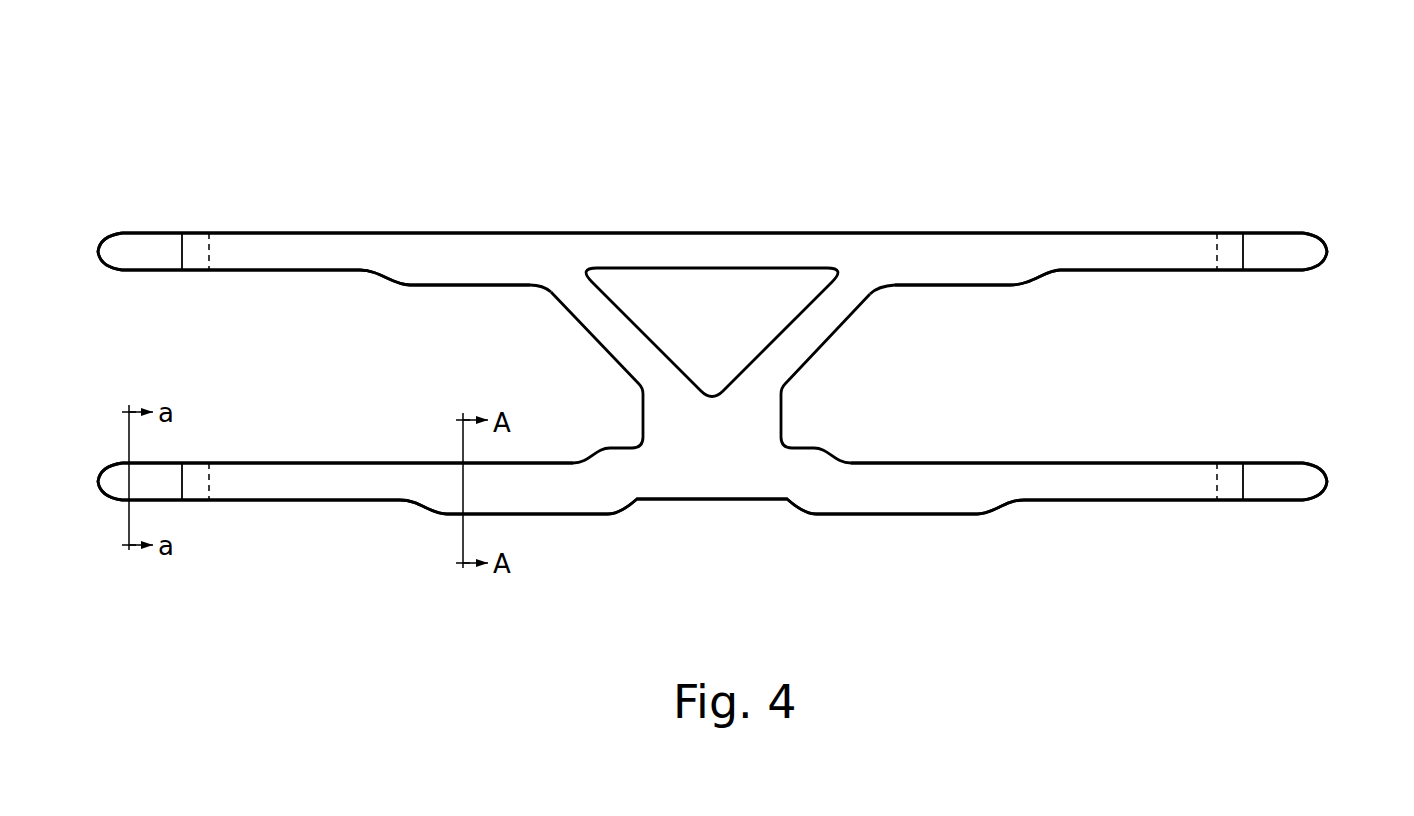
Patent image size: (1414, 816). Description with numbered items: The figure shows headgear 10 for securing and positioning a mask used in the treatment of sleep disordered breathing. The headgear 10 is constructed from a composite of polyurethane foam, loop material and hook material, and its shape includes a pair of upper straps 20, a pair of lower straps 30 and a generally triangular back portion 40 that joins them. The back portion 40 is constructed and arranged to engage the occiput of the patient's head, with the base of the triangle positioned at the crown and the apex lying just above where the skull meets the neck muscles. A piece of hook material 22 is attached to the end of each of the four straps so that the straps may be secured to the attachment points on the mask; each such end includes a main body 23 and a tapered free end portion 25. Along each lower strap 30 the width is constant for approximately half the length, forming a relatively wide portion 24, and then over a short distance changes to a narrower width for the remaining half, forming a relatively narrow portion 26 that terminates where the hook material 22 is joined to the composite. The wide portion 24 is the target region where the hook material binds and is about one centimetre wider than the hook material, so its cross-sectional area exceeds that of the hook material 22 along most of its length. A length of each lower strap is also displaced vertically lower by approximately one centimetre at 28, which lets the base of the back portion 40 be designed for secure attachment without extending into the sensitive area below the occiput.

The headgear 10 is at (543, 139).
The upper straps 20 is at (362, 205).
The hook material 22 is at (1289, 459).
The main body 23 is at (150, 243).
The wide portion 24 is at (521, 231).
The tapered free end portion 25 is at (105, 249).
The narrow portion 26 is at (299, 274).
The vertical displacement of lower strap 28 is at (645, 503).
The lower straps 30 is at (385, 537).
The generally triangular back portion 40 is at (570, 338).